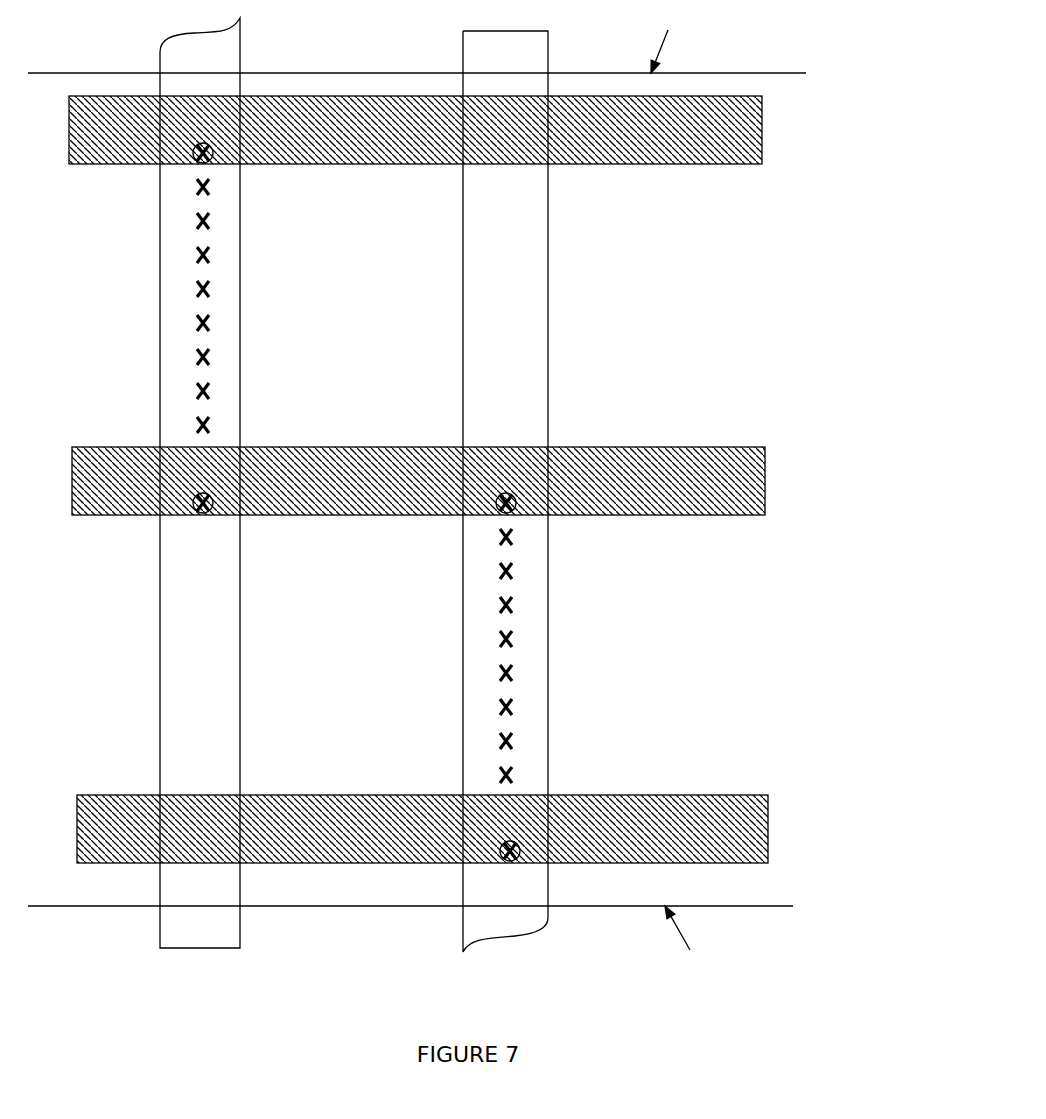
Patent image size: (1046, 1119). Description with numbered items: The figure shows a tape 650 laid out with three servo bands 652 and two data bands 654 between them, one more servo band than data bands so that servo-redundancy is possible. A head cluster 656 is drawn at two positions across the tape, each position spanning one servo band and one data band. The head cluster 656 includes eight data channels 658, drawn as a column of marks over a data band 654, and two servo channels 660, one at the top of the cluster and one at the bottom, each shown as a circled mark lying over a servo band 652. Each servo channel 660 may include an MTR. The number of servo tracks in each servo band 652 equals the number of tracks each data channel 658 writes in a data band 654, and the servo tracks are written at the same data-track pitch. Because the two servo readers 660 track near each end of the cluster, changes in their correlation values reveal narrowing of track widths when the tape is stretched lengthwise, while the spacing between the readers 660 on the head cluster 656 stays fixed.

The tape 650 is at (773, 294).
The servo band 652 is at (727, 171).
The data band 654 is at (135, 173).
The head cluster 656 is at (242, 928).
The data channel 658 is at (212, 186).
The servo channel 660 is at (213, 153).